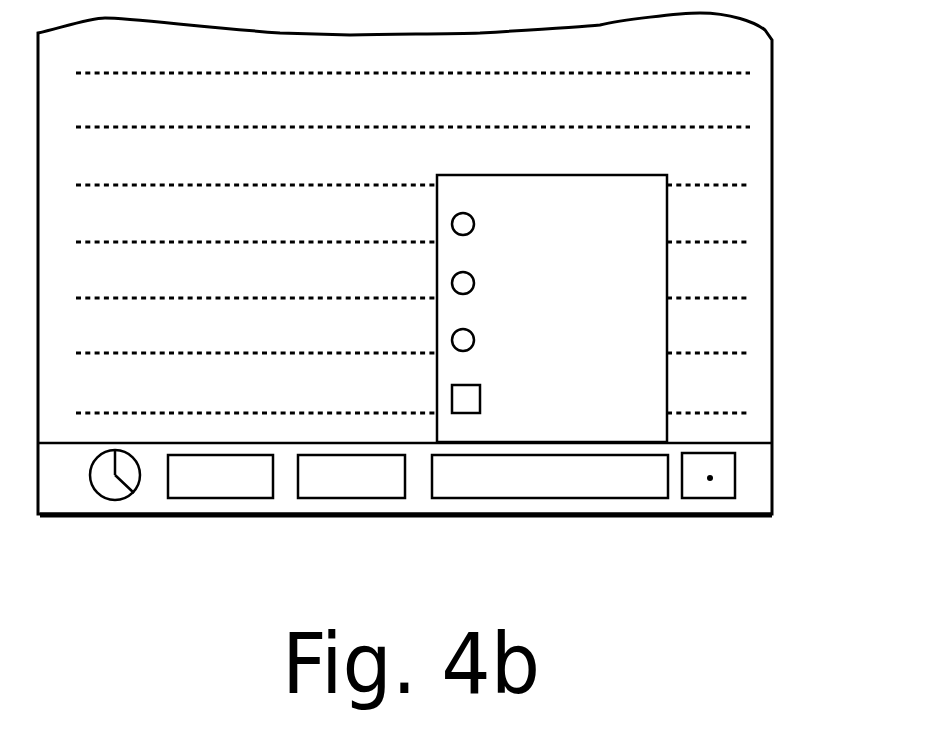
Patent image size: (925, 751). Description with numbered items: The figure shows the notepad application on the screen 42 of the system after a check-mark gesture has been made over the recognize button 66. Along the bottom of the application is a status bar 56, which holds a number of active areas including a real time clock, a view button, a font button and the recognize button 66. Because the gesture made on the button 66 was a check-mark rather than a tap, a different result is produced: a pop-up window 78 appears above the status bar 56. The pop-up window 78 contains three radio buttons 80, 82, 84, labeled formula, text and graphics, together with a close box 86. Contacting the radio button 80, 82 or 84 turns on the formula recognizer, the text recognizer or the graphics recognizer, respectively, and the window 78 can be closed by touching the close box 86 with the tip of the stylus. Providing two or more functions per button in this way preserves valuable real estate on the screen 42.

The screen 42 is at (752, 147).
The status bar 56 is at (760, 483).
The recognize button 66 is at (585, 493).
The pop-up window 78 is at (627, 192).
The radio button 80 is at (452, 226).
The radio button 82 is at (454, 281).
The radio button 84 is at (454, 337).
The close box 86 is at (452, 390).